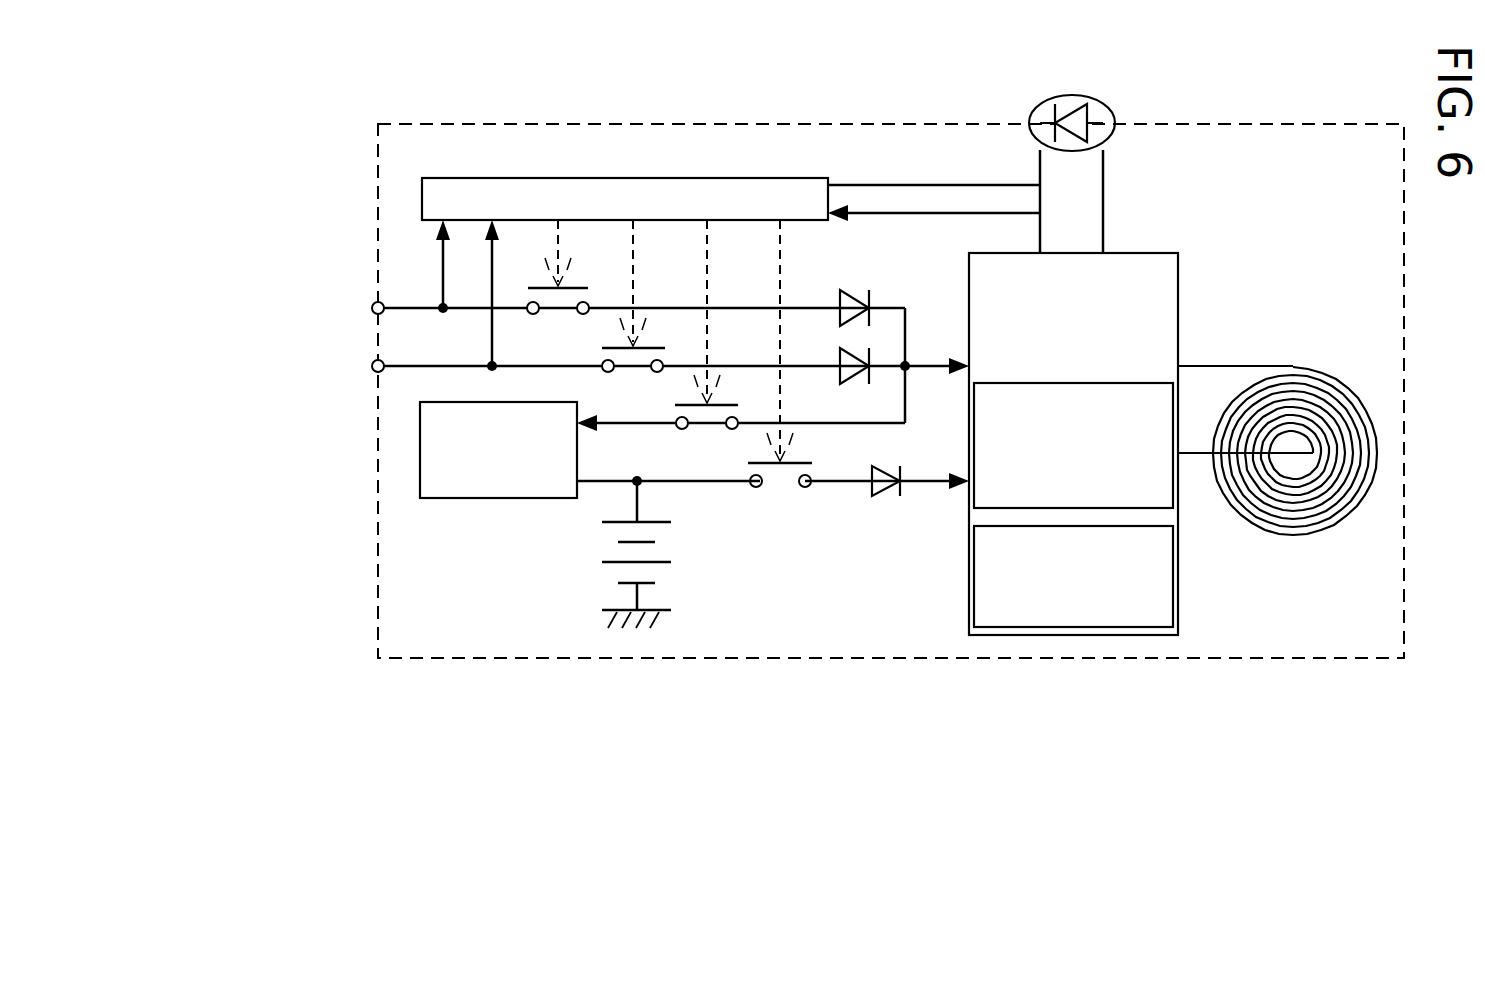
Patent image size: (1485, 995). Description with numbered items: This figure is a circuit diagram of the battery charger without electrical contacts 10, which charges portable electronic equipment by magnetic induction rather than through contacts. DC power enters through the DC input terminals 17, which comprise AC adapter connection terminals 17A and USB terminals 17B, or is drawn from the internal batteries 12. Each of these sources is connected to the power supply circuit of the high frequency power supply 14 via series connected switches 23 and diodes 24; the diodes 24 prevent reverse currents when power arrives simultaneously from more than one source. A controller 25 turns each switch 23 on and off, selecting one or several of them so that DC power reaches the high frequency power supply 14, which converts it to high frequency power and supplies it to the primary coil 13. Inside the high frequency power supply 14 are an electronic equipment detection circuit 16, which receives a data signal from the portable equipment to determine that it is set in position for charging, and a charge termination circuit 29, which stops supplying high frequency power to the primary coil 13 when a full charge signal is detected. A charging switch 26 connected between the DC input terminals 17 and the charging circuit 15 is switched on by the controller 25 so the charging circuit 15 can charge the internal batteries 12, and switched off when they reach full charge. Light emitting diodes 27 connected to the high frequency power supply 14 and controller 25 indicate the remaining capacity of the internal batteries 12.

The battery charger without electrical contacts 10 is at (790, 124).
The internal batteries 12 is at (671, 562).
The primary coil 13 is at (1310, 520).
The high frequency power supply 14 is at (1178, 318).
The charging circuit 15 is at (492, 498).
The electronic equipment detection circuit 16 is at (1173, 497).
The DC input terminals 17 is at (468, 333).
The AC adapter connection terminals 17A is at (372, 308).
The USB terminals 17B is at (565, 372).
The switches 23 is at (593, 291).
The diodes 24 is at (847, 290).
The controller 25 is at (652, 178).
The charging switch 26 is at (728, 397).
The light emitting diodes 27 is at (1113, 108).
The charge termination circuit 29 is at (1178, 585).